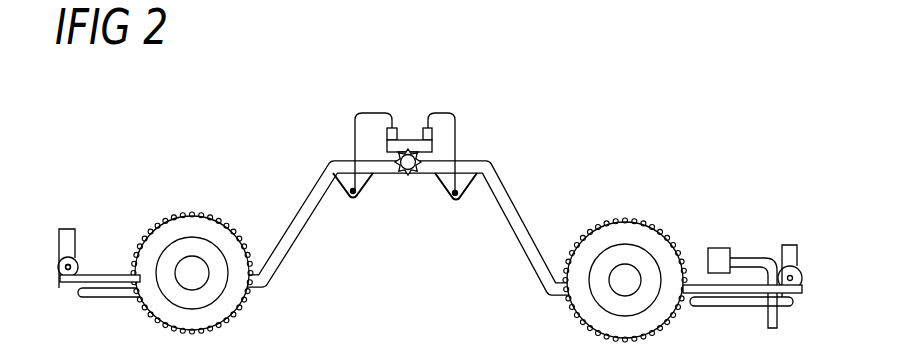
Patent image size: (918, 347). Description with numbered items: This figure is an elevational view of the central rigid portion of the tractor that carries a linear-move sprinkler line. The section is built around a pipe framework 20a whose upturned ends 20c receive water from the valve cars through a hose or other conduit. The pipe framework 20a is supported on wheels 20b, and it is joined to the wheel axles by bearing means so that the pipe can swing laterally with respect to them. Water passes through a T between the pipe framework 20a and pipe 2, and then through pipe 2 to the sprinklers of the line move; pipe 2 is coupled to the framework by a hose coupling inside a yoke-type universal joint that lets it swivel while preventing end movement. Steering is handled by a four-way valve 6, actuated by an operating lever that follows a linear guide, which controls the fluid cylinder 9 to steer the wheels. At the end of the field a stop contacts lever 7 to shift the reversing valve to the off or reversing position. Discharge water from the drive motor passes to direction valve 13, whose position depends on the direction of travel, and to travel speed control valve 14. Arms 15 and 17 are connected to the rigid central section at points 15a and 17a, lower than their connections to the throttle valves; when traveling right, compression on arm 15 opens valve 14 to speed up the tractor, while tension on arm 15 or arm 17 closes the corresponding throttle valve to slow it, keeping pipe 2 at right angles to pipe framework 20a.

The pipe 2 is at (404, 176).
The four-way valve 6 is at (742, 266).
The lever 7 is at (762, 318).
The fluid cylinder 9 is at (82, 270).
The direction valve 13 is at (385, 148).
The travel speed control valve 14 is at (416, 130).
The arm 15 is at (460, 141).
The connection point 15a is at (448, 197).
The arm 17 is at (352, 145).
The connection point 17a is at (350, 198).
The pipe framework 20a is at (508, 186).
The wheels 20b is at (637, 222).
The upturned ends 20c is at (78, 238).